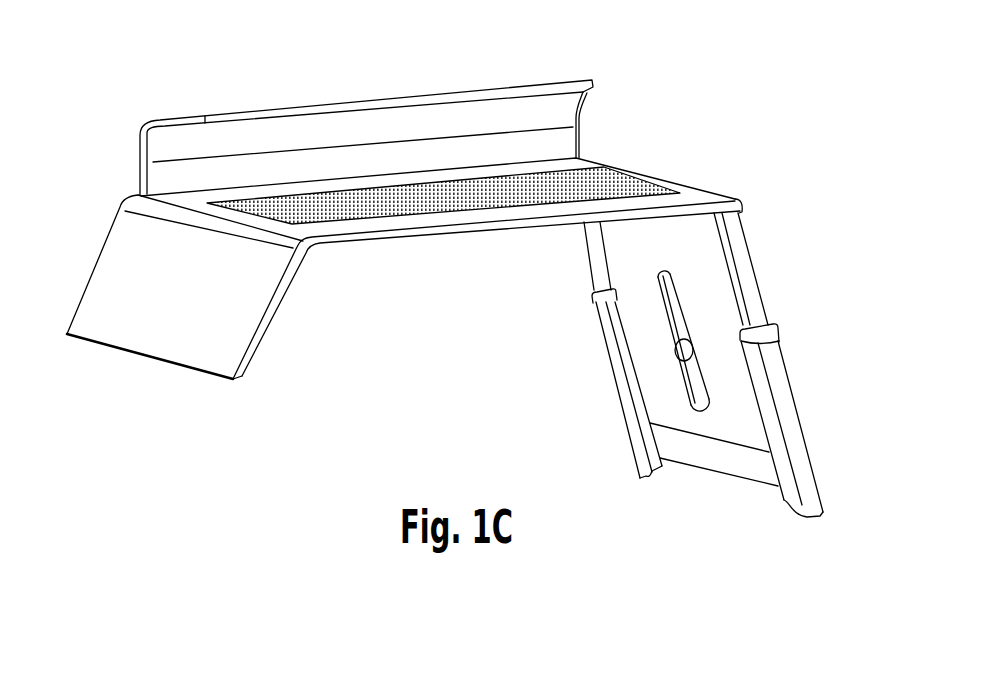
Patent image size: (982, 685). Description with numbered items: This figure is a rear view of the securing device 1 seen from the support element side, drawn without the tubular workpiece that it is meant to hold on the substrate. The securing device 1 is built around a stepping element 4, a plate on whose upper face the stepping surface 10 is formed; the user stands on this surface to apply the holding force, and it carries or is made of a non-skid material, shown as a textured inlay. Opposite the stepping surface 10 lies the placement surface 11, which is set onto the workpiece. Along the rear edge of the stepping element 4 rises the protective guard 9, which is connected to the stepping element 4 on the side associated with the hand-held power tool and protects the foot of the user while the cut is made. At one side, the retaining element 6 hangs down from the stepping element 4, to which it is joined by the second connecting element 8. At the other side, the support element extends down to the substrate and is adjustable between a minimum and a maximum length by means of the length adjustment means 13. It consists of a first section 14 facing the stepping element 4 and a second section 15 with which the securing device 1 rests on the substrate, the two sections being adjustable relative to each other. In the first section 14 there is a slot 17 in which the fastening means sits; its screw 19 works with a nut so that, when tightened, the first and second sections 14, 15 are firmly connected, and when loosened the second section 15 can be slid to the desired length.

The securing device 1 is at (293, 400).
The stepping element 4 is at (654, 156).
The retaining element 6 is at (150, 333).
The second connecting element 8 is at (171, 213).
The protective guard 9 is at (447, 120).
The stepping surface 10 is at (298, 207).
The placement surface 11 is at (363, 243).
The length adjustment means 13 is at (797, 333).
The first section 14 is at (707, 243).
The second section 15 is at (757, 470).
The slot 17 is at (706, 414).
The screw 19 is at (675, 350).